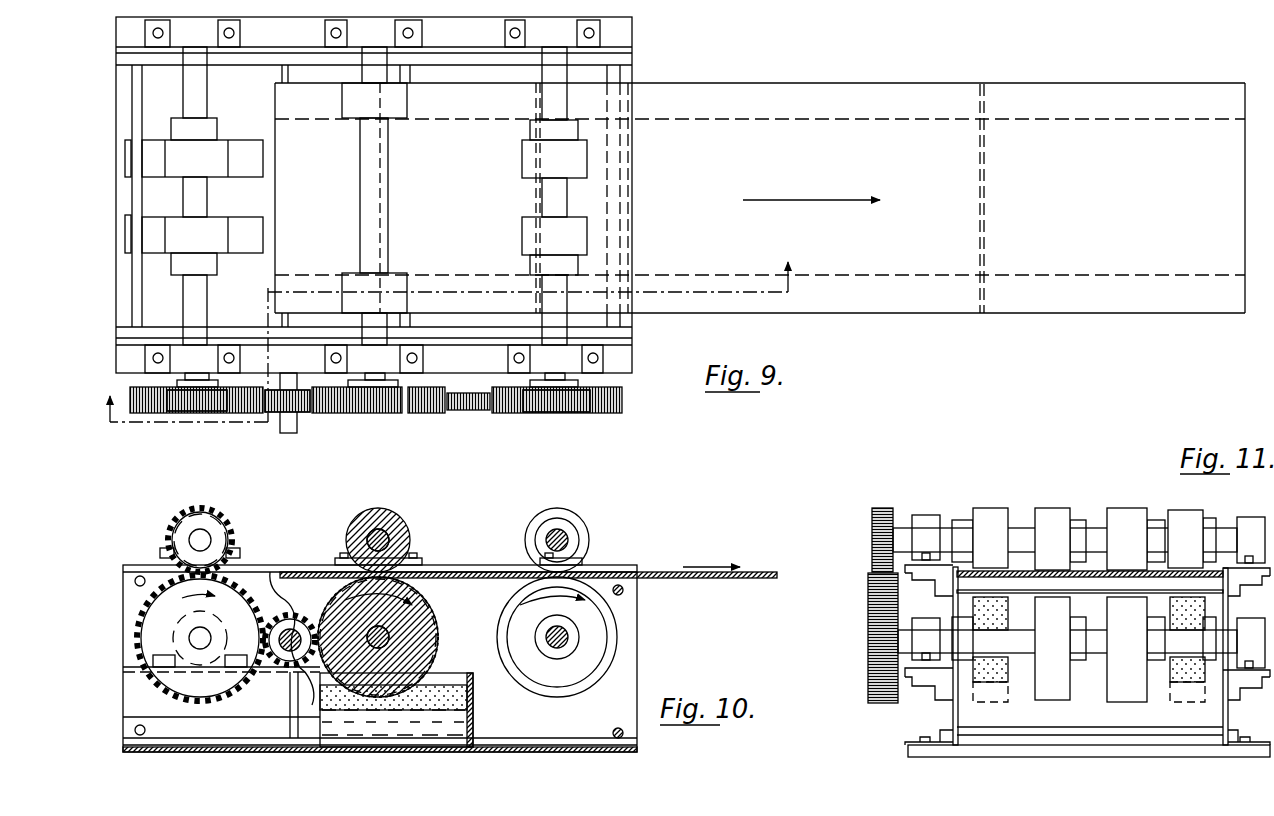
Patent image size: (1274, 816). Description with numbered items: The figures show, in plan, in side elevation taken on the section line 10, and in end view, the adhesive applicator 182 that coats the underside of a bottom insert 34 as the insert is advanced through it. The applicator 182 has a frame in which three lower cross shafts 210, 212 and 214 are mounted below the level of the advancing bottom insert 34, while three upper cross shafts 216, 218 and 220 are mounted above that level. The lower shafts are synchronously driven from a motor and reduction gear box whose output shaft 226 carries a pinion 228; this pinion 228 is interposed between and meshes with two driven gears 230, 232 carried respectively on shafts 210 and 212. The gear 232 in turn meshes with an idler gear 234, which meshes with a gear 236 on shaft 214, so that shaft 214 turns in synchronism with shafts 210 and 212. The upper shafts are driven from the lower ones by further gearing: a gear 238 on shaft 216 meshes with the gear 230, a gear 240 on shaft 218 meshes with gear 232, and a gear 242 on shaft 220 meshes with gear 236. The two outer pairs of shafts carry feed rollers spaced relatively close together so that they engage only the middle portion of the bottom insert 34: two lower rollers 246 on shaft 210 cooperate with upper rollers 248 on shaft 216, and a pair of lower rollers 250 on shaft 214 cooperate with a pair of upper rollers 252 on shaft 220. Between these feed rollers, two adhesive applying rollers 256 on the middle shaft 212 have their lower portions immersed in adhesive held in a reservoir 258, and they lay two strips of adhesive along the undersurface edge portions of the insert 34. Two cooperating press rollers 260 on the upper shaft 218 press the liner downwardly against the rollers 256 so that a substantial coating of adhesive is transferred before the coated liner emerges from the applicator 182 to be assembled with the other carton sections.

In FIG. 9, the section line 10- 10 is at (463, 359).
In FIG. 9, the bottom insert 34 is at (874, 303).
In FIG. 10, the bottom insert 34 is at (766, 571).
In FIG. 11, the bottom insert 34 is at (1115, 572).
In FIG. 9, the adhesive applicator 182 is at (637, 362).
In FIG. 10, the adhesive applicator 182 is at (585, 753).
In FIG. 11, the adhesive applicator 182 is at (1087, 636).
In FIG. 10, the cross shaft 210 is at (210, 636).
In FIG. 10, the cross shaft 212 is at (386, 637).
In FIG. 10, the cross shaft 214 is at (560, 655).
In FIG. 11, the cross shaft 214 is at (1093, 632).
In FIG. 9, the cross shaft 216 is at (197, 190).
In FIG. 10, the cross shaft 216 is at (210, 540).
In FIG. 9, the cross shaft 218 is at (383, 228).
In FIG. 10, the cross shaft 218 is at (386, 538).
In FIG. 9, the cross shaft 220 is at (562, 285).
In FIG. 10, the cross shaft 220 is at (553, 533).
In FIG. 11, the cross shaft 220 is at (1225, 528).
In FIG. 9, the output shaft 226 is at (289, 432).
In FIG. 10, the output shaft 226 is at (290, 640).
In FIG. 9, the pinion 228 is at (290, 388).
In FIG. 9, the driven gear 230 is at (158, 415).
In FIG. 10, the driven gear 230 is at (152, 585).
In FIG. 9, the driven gear 232 is at (432, 413).
In FIG. 9, the idler gear 234 is at (476, 411).
In FIG. 9, the gear 236 is at (518, 413).
In FIG. 11, the gear 236 is at (867, 655).
In FIG. 9, the gear 238 is at (208, 413).
In FIG. 10, the gear 238 is at (180, 516).
In FIG. 9, the gear 240 is at (386, 413).
In FIG. 9, the gear 242 is at (563, 413).
In FIG. 11, the gear 242 is at (888, 506).
In FIG. 9, the lower rollers 246 is at (250, 168).
In FIG. 9, the upper rollers 248 is at (175, 168).
In FIG. 10, the lower rollers 250 is at (617, 664).
In FIG. 11, the lower rollers 250 is at (1110, 688).
In FIG. 9, the upper rollers 252 is at (565, 165).
In FIG. 10, the upper rollers 252 is at (582, 522).
In FIG. 11, the upper rollers 252 is at (1117, 508).
In FIG. 10, the adhesive applying rollers 256 is at (432, 654).
In FIG. 11, the adhesive applying rollers 256 is at (980, 663).
In FIG. 10, the reservoir 258 is at (450, 740).
In FIG. 9, the press rollers 260 is at (357, 273).
In FIG. 10, the press rollers 260 is at (378, 509).
In FIG. 11, the press rollers 260 is at (994, 508).